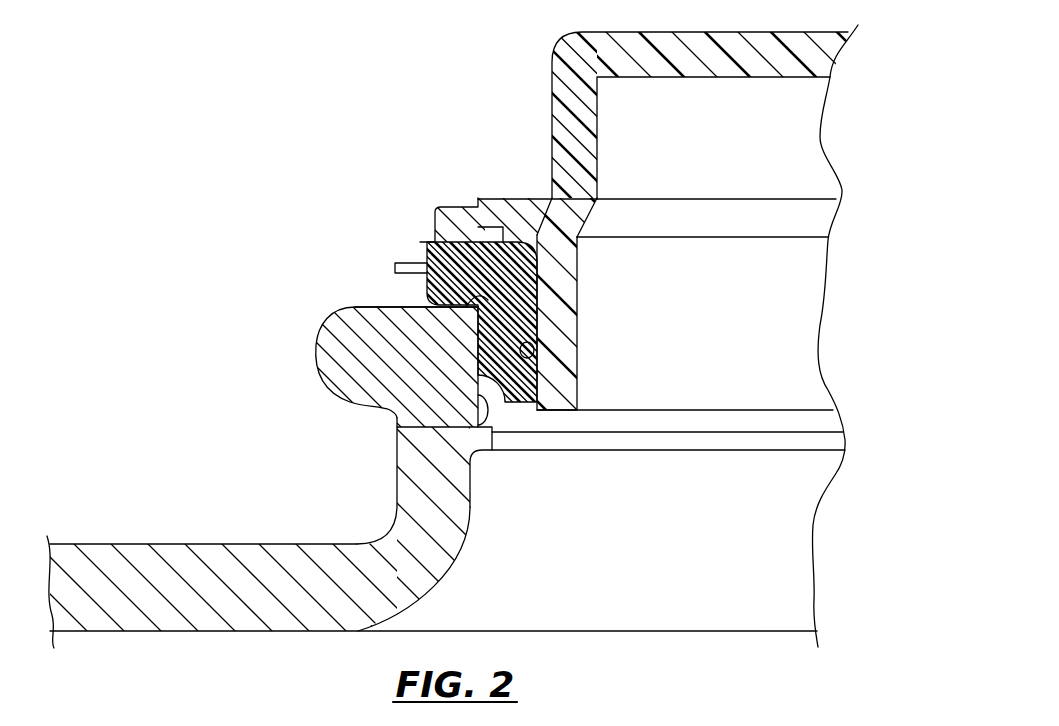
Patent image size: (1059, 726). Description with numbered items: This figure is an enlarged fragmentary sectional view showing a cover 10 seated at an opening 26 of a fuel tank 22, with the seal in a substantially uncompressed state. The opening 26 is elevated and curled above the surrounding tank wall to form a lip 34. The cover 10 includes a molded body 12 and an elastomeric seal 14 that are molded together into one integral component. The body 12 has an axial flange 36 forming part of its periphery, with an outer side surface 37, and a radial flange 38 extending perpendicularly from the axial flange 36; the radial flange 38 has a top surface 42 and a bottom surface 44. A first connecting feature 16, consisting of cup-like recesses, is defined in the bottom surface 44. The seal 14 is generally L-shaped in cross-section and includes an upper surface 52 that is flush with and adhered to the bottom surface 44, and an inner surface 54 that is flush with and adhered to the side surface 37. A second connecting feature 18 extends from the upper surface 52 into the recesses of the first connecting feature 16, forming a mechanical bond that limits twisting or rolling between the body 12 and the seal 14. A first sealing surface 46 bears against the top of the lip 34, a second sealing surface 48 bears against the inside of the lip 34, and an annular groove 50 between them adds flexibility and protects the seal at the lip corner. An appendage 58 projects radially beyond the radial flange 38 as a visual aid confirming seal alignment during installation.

The cover 10 is at (534, 74).
The body 12 is at (567, 148).
The seal 14 is at (433, 258).
The first connecting feature 16 is at (490, 233).
The second connecting feature 18 is at (488, 234).
The fuel tank 22 is at (176, 558).
The opening 26 is at (400, 426).
The lip 34 is at (376, 347).
The axial flange 36 is at (553, 325).
The side surface 37 is at (535, 352).
The radial flange 38 is at (450, 210).
The top surface 42 is at (510, 198).
The bottom surface 44 is at (432, 246).
The first sealing surface 46 is at (475, 297).
The second sealing surface 48 is at (480, 344).
The annular groove 50 is at (472, 303).
The upper surface 52 is at (522, 238).
The inner surface 54 is at (550, 296).
The appendage 58 is at (412, 268).